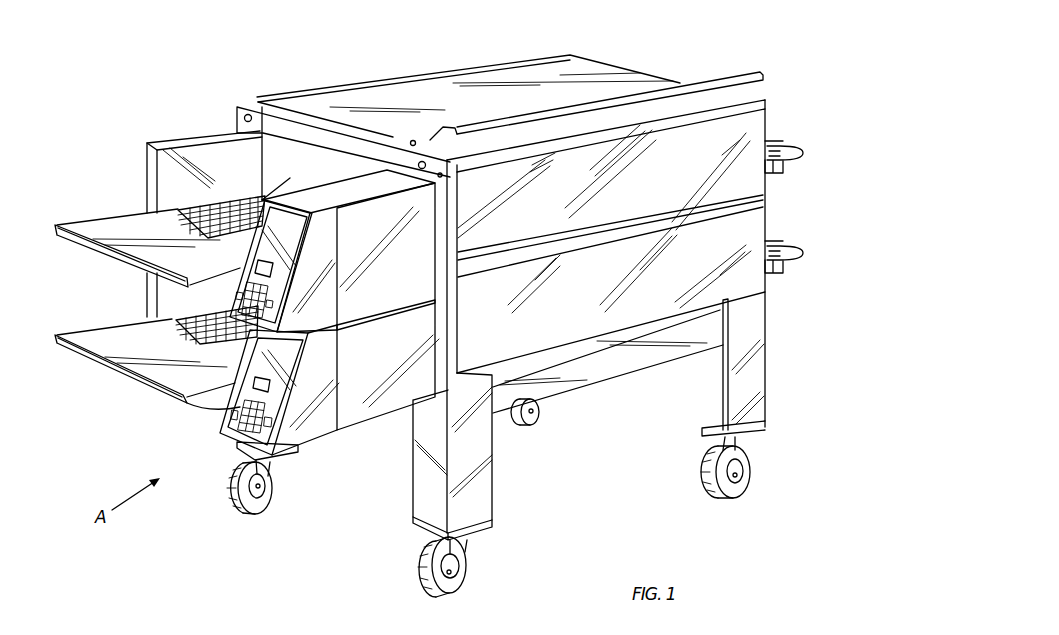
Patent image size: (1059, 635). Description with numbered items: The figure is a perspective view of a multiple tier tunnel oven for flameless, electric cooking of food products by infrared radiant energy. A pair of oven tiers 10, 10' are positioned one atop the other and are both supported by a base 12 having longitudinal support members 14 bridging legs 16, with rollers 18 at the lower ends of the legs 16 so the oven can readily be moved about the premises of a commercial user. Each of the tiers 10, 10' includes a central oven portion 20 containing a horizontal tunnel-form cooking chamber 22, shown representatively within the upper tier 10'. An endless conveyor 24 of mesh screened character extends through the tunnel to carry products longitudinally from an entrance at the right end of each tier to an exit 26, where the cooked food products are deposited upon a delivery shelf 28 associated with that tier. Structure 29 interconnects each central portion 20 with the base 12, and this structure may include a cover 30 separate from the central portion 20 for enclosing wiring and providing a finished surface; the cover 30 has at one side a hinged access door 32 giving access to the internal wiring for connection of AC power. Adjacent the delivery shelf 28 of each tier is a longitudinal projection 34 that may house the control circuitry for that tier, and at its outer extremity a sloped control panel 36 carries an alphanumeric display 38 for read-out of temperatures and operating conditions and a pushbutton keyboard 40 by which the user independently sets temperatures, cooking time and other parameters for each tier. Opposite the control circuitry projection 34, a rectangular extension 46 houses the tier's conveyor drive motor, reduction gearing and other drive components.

The oven tier 10 is at (649, 283).
The upper oven tier 10' is at (652, 183).
The base 12 is at (395, 508).
The longitudinal support member 14 is at (620, 375).
The leg 16 is at (293, 457).
The roller 18 is at (267, 500).
The central oven portion 20 is at (641, 198).
The tunnel-form cooking chamber 22 is at (280, 180).
The endless conveyor 24 is at (200, 208).
The exit 26 is at (293, 173).
The delivery shelf 28 is at (107, 222).
The interconnecting structure 29 is at (458, 213).
The cover 30 is at (493, 62).
The hinged access door 32 is at (729, 73).
The longitudinal projection 34 is at (405, 272).
The control panel 36 is at (285, 277).
The alphanumeric display 38 is at (265, 268).
The pushbutton keyboard 40 is at (217, 335).
The rectangular extension 46 is at (163, 143).